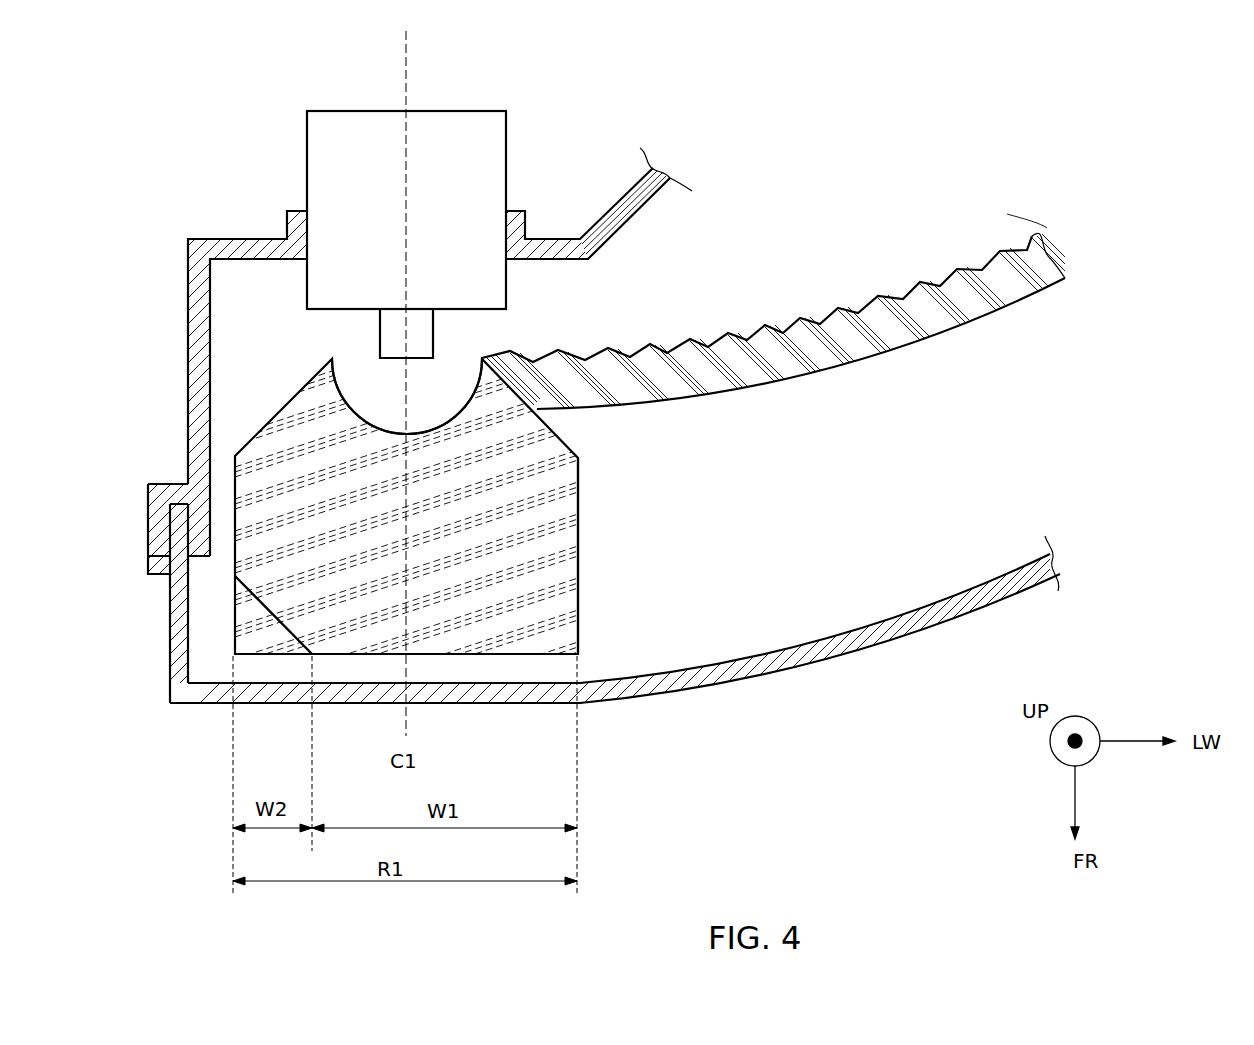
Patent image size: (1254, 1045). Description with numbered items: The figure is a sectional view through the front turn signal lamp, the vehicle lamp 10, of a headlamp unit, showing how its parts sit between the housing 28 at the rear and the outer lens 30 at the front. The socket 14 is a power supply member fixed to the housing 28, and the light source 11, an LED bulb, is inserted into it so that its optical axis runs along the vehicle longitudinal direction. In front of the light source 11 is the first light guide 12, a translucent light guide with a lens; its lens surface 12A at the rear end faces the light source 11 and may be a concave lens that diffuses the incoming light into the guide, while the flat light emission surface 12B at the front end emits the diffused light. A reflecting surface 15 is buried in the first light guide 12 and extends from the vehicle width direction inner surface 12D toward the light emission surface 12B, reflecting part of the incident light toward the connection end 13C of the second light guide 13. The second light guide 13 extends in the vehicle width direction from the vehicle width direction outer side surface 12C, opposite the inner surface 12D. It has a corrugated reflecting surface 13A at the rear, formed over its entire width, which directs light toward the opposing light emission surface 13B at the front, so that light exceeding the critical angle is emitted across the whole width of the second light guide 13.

The vehicle lamp 10 is at (793, 212).
The light source 11 is at (440, 335).
The first light guide 12 is at (582, 630).
The lens surface 12A is at (357, 380).
The light emission surface 12B is at (483, 657).
The vehicle width direction outer side surface 12C is at (580, 525).
The vehicle width direction inner surface 12D is at (228, 482).
The second light guide 13 is at (773, 331).
The reflecting surface 13A is at (737, 333).
The light emission surface 13B is at (747, 387).
The connection end 13C is at (498, 403).
The socket 14 is at (307, 150).
The reflecting surface 15 is at (307, 607).
The housing 28 is at (187, 283).
The outer lens 30 is at (697, 690).